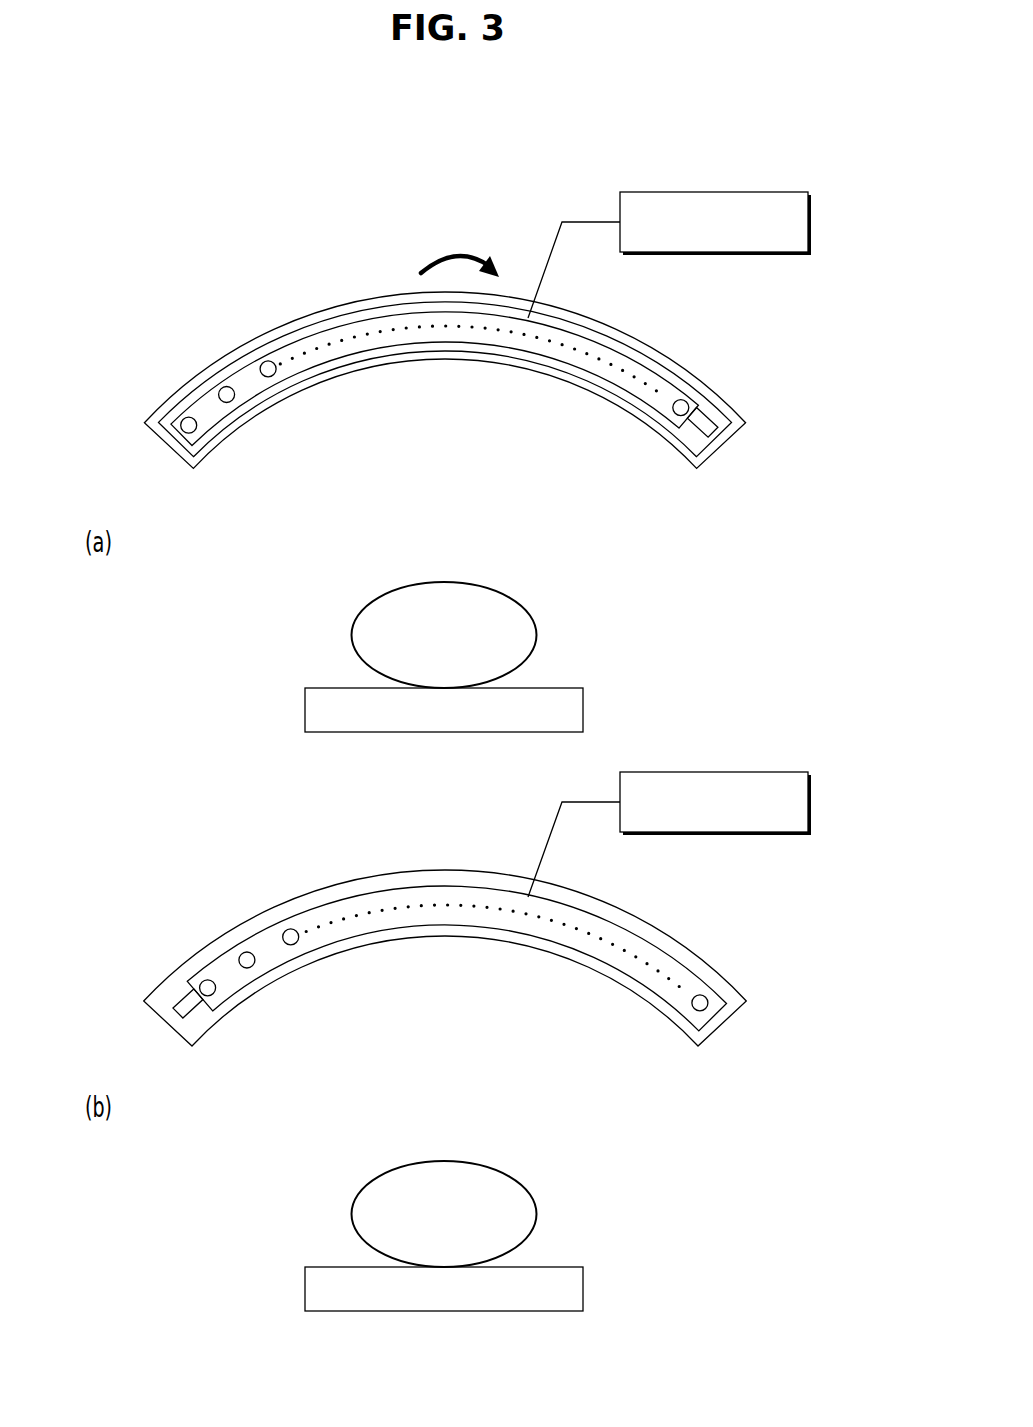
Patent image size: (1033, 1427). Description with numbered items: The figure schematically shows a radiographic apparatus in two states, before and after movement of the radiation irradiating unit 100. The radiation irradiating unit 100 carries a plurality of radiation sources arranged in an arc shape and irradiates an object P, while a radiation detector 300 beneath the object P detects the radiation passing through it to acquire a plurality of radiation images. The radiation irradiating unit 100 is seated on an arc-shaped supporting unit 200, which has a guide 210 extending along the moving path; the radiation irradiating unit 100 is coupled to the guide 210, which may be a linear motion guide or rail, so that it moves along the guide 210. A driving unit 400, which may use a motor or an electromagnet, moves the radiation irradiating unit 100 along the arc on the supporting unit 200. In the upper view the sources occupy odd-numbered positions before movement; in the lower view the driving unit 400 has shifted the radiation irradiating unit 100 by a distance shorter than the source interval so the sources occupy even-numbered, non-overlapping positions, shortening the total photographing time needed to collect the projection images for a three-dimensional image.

The radiation irradiating unit 100 is at (598, 340).
The supporting unit 200 is at (721, 446).
The guide 210 is at (712, 422).
The radiation detector 300 is at (570, 707).
The driving unit 400 is at (782, 192).
The object P is at (523, 637).